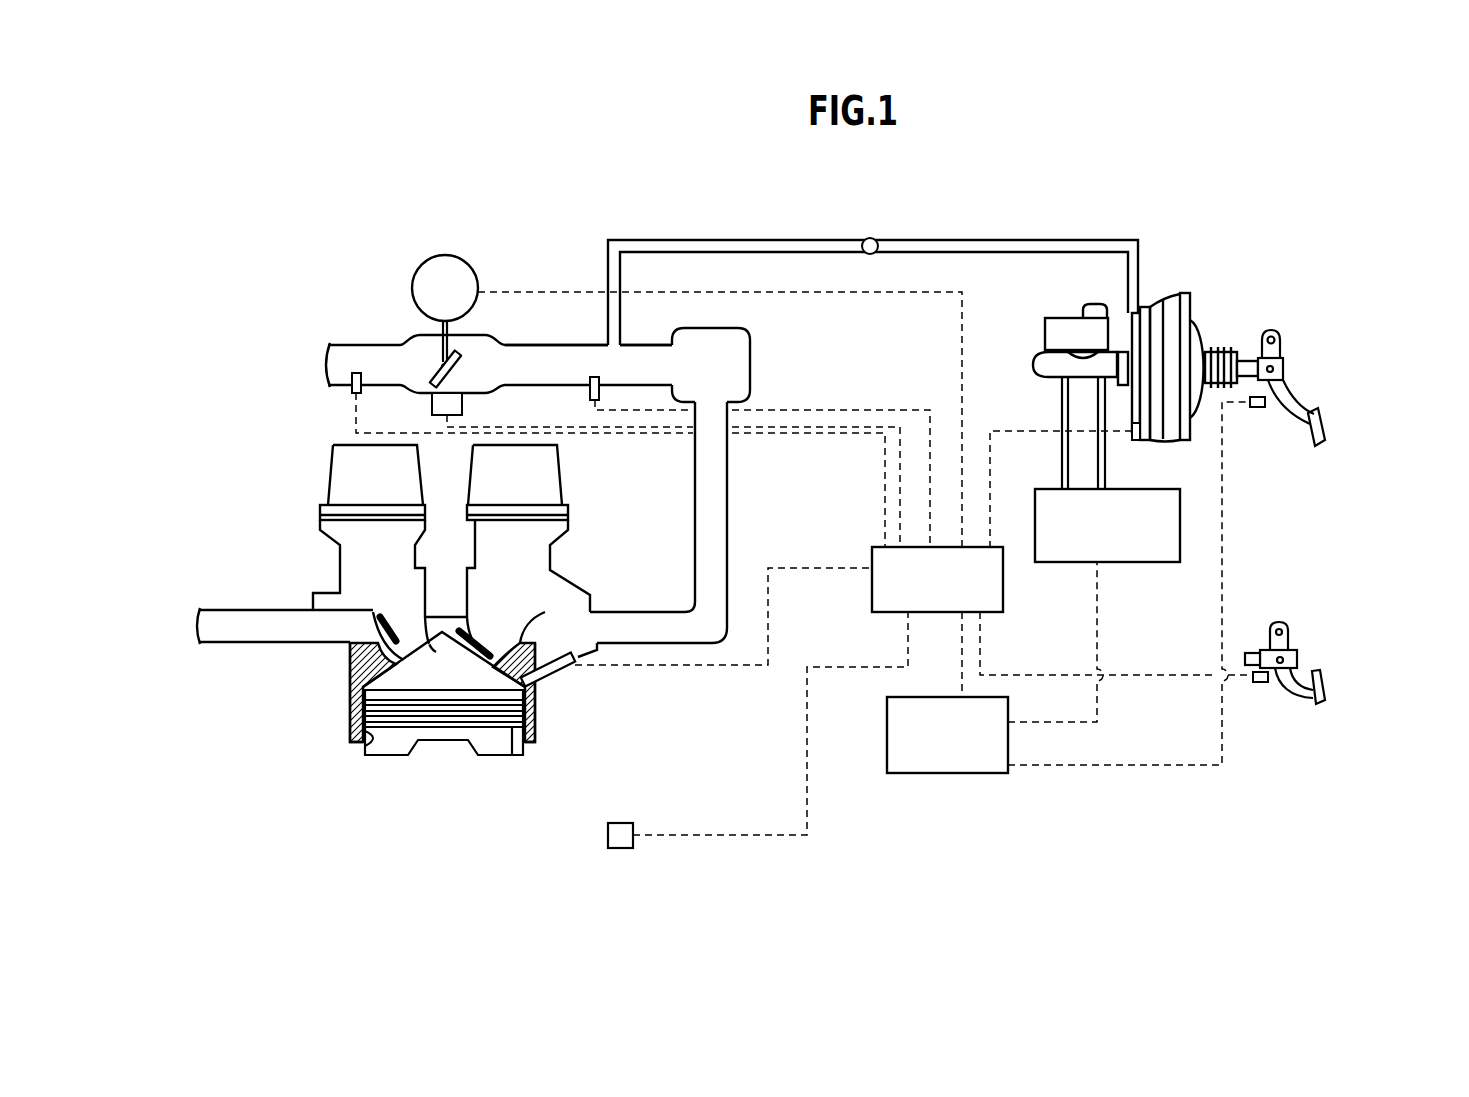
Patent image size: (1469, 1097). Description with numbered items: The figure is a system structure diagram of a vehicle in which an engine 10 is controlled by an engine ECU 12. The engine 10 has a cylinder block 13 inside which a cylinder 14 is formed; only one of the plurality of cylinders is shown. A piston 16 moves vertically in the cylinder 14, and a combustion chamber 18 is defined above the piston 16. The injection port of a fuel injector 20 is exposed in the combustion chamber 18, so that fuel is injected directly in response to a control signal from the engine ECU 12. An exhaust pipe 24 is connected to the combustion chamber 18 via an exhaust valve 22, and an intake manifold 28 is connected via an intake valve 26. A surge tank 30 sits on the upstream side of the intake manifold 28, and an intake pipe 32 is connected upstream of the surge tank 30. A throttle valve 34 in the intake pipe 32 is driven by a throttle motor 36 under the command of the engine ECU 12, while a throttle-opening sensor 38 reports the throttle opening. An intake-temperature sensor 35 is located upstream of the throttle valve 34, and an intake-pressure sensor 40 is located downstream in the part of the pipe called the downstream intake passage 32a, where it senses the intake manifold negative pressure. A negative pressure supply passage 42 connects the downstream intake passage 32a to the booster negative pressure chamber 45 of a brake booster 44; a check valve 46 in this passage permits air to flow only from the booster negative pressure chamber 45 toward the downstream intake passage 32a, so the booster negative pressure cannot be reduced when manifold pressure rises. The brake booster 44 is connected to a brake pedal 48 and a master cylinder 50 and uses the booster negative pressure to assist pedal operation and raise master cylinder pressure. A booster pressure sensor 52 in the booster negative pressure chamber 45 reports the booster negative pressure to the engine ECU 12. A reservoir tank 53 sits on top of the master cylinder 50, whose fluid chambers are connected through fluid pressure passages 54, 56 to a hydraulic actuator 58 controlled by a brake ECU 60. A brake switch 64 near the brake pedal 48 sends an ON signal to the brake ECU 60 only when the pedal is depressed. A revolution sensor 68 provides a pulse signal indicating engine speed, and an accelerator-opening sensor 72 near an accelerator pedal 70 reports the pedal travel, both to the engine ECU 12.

The engine 10 is at (568, 736).
The engine ECU 12 is at (871, 600).
The cylinder block 13 is at (358, 665).
The cylinder 14 is at (366, 746).
The piston 16 is at (402, 757).
The combustion chamber 18 is at (490, 683).
The fuel injector 20 is at (547, 672).
The exhaust valve 22 is at (408, 637).
The exhaust pipe 24 is at (238, 630).
The intake valve 26 is at (475, 637).
The intake manifold 28 is at (728, 540).
The surge tank 30 is at (751, 360).
The intake pipe 32 is at (333, 344).
The downstream intake passage 32a is at (528, 344).
The throttle valve 34 is at (433, 376).
The intake-temperature sensor 35 is at (353, 394).
The throttle motor 36 is at (445, 256).
The throttle-opening sensor 38 is at (432, 408).
The intake-pressure sensor 40 is at (590, 390).
The negative pressure supply passage 42 is at (745, 240).
The brake booster 44 is at (1175, 294).
The booster negative pressure chamber 45 is at (1150, 306).
The check valve 46 is at (873, 238).
The brake pedal 48 is at (1318, 418).
The master cylinder 50 is at (1033, 366).
The booster pressure sensor 52 is at (1137, 441).
The reservoir tank 53 is at (1060, 318).
The fluid pressure passage 54 is at (1102, 382).
The fluid pressure passage 56 is at (1068, 475).
The hydraulic actuator 58 is at (1036, 500).
The brake ECU 60 is at (920, 773).
The brake switch 64 is at (1258, 408).
The revolution sensor 68 is at (615, 840).
The accelerator pedal 70 is at (1323, 673).
The accelerator-opening sensor 72 is at (1254, 683).